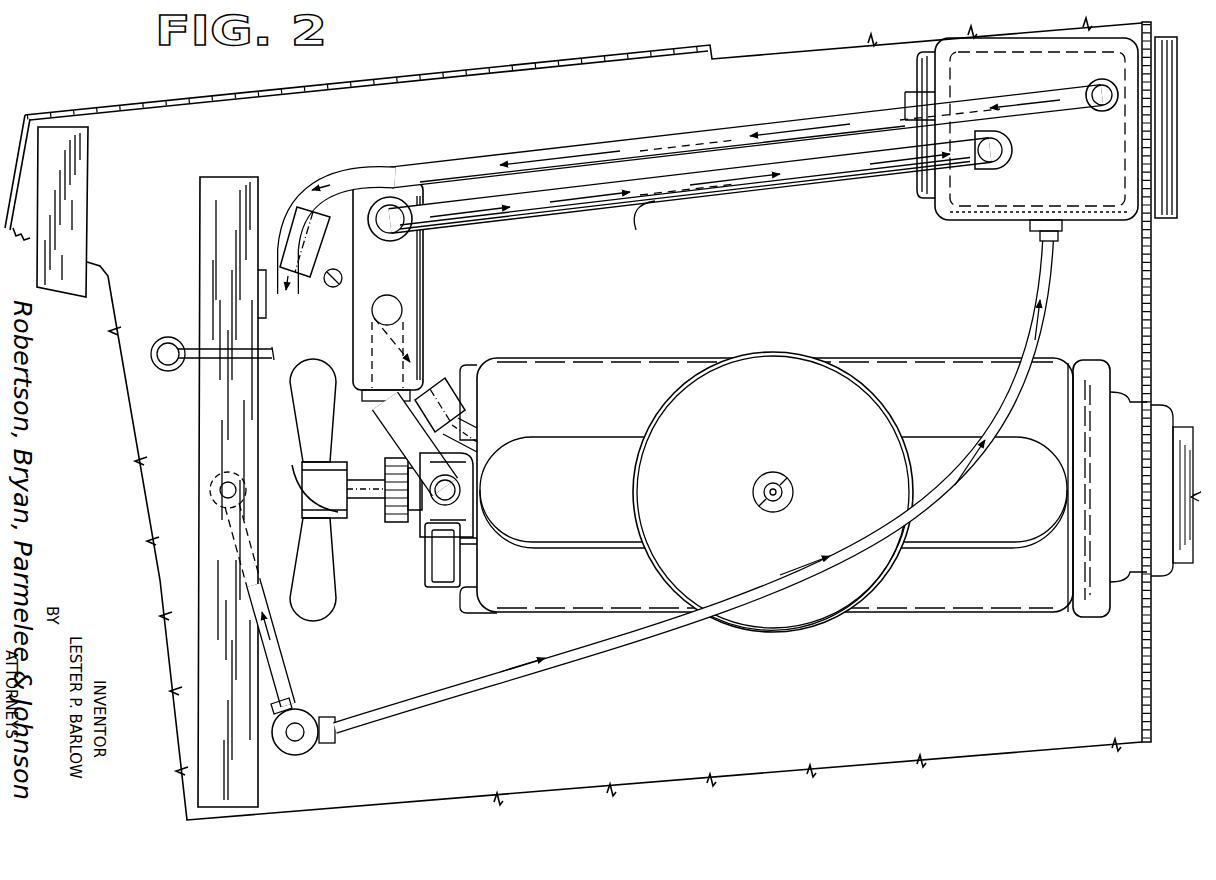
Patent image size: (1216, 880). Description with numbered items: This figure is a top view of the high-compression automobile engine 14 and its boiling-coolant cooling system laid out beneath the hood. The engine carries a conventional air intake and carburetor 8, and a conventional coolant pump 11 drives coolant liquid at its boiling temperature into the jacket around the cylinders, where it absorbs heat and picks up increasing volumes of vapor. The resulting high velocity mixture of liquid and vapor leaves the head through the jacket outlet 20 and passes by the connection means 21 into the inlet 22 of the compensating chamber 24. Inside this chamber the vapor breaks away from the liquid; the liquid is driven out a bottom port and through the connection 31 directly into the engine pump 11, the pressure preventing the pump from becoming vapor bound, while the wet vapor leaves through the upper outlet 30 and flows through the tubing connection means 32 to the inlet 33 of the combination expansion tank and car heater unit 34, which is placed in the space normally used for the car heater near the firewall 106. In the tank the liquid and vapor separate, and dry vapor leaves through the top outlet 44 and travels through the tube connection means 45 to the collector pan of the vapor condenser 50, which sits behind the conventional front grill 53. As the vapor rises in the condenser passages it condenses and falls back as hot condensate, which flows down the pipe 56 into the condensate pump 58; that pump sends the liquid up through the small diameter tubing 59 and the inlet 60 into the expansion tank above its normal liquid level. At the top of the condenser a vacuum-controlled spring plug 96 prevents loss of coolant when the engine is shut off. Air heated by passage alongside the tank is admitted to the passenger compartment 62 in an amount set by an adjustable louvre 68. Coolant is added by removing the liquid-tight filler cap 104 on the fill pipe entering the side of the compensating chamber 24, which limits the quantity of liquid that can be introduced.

The air intake and carburetor 8 is at (776, 352).
The coolant pump 11 is at (450, 533).
The high-compression automobile engine 14 is at (552, 350).
The jacket outlet 20 is at (440, 502).
The connection means 21 is at (378, 440).
The inlet 22 is at (378, 402).
The compensating chamber 24 is at (432, 323).
The outlet for the wet vapor 30 is at (408, 234).
The connection 31 is at (443, 384).
The tubing connection means 32 is at (778, 189).
The inlet 33 is at (1003, 152).
The combination expansion tank and car heater unit 34 is at (978, 229).
The top outlet 44 is at (1097, 88).
The tube connection means 45 is at (617, 140).
The vapor condenser 50 is at (210, 415).
The front grill 53 is at (78, 172).
The pipe 56 is at (283, 662).
The condensate pump 58 is at (314, 698).
The small diameter tubing 59 is at (508, 668).
The inlet 60 is at (1062, 231).
The passenger compartment 62 is at (1200, 308).
The adjustable louvre 68 is at (1178, 212).
The vacuum-controlled spring plug 96 is at (166, 340).
The filler cap 104 is at (334, 288).
The firewall 106 is at (1149, 368).